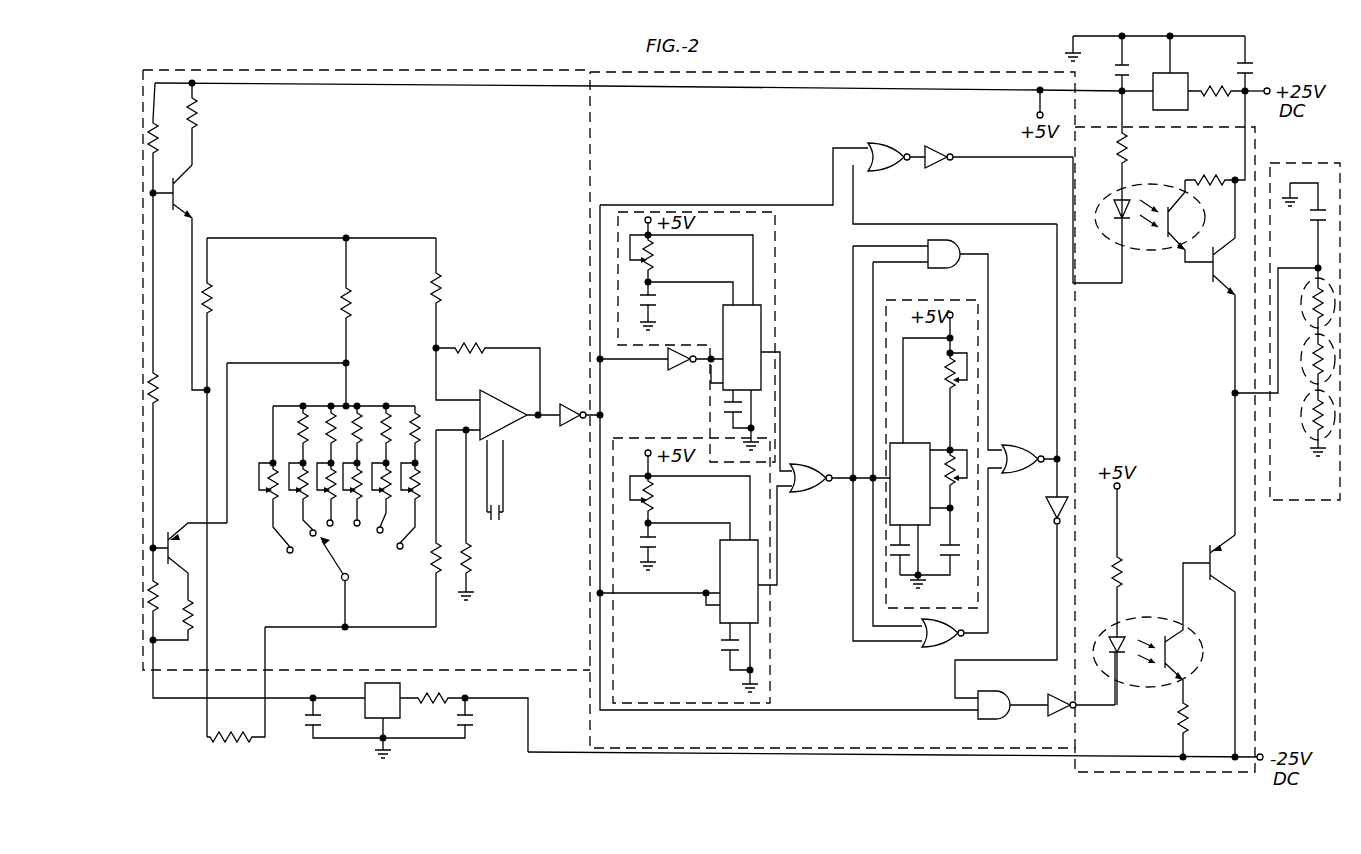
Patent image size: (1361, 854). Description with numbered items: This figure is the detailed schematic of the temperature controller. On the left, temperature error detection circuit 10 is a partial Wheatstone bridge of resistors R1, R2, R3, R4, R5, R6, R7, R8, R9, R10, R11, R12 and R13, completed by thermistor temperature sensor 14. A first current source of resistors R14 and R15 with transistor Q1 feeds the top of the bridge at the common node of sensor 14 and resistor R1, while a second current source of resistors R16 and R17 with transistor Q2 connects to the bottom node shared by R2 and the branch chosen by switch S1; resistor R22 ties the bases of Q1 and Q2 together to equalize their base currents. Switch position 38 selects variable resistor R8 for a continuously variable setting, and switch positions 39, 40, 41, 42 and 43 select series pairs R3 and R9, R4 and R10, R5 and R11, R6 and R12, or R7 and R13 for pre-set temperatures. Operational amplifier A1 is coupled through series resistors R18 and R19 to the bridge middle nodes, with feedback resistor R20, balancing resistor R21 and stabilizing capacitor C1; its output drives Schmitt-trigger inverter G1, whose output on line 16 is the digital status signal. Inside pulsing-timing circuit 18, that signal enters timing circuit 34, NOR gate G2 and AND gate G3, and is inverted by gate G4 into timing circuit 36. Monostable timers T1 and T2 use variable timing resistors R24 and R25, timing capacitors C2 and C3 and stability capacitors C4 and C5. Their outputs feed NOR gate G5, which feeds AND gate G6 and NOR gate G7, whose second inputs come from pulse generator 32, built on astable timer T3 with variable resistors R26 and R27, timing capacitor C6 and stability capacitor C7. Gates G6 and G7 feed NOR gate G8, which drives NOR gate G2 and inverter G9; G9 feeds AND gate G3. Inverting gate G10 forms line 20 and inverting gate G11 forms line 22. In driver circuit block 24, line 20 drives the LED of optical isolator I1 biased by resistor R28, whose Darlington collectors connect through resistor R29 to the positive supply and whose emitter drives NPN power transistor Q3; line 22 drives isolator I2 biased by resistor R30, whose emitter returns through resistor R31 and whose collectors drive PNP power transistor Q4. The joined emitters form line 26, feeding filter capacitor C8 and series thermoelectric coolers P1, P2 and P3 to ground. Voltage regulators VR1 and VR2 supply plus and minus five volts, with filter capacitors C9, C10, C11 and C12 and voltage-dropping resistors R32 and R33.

The temperature error detection circuit 10 is at (446, 72).
The temperature sensor 14 is at (238, 732).
The line 16 is at (590, 422).
The pulsing-timing circuit 18 is at (924, 73).
The line 20 is at (1003, 158).
The line 22 is at (1100, 706).
The driver circuit block 24 is at (1262, 560).
The line 26 is at (1234, 398).
The pulse generator 32 is at (936, 300).
The timing circuit 34 is at (624, 440).
The timing circuit 36 is at (778, 276).
The switch position 38 is at (286, 554).
The switch position 39 is at (312, 538).
The switch position 40 is at (333, 526).
The switch position 41 is at (358, 528).
The switch position 42 is at (380, 534).
The switch position 43 is at (402, 550).
The operational amplifier A1 is at (504, 397).
The stabilizing capacitor C1 is at (504, 516).
The timing capacitor C2 is at (658, 548).
The timing capacitor C3 is at (658, 300).
The capacitor C4 is at (738, 650).
The capacitor C5 is at (733, 412).
The timing capacitor C6 is at (960, 550).
The capacitor C7 is at (895, 548).
The filter capacitor C8 is at (1316, 212).
The capacitor C9 is at (1240, 68).
The capacitor C10 is at (1115, 70).
The capacitor C11 is at (476, 719).
The capacitor C12 is at (312, 724).
The logic gate inverter G1 is at (565, 403).
The NOR gate G2 is at (876, 144).
The AND gate G3 is at (990, 692).
The inverting gate G4 is at (684, 351).
The NOR gate G5 is at (806, 468).
The AND gate G6 is at (961, 247).
The NOR gate G7 is at (935, 648).
The NOR gate G8 is at (1018, 446).
The inverter gate G9 is at (1050, 520).
The inverting gate G10 is at (940, 146).
The inverting gate G11 is at (1052, 700).
The optical isolation device I1 is at (1152, 255).
The optical isolation device I2 is at (1128, 618).
The thermoelectric cooler P1 is at (1306, 306).
The thermoelectric cooler P2 is at (1304, 360).
The thermoelectric cooler P3 is at (1304, 410).
The transistor Q1 is at (178, 190).
The transistor Q2 is at (172, 530).
The NPN power transistor Q3 is at (1210, 282).
The PNP power transistor Q4 is at (1208, 556).
The resistor R1 is at (212, 292).
The resistor R2 is at (352, 312).
The fixed resistor R3 is at (300, 430).
The fixed resistor R4 is at (331, 432).
The fixed resistor R5 is at (360, 425).
The fixed resistor R6 is at (388, 428).
The fixed resistor R7 is at (419, 446).
The variable resistor R8 is at (283, 493).
The variable resistor R9 is at (305, 493).
The variable resistor R10 is at (330, 495).
The variable resistor R11 is at (355, 500).
The variable resistor R12 is at (393, 480).
The variable resistor R13 is at (420, 490).
The resistor R14 is at (160, 138).
The resistor R15 is at (198, 112).
The resistor R16 is at (155, 618).
The resistor R17 is at (192, 618).
The series resistor R18 is at (441, 290).
The series resistor R19 is at (438, 582).
The feedback resistor R20 is at (472, 345).
The balancing resistor R21 is at (468, 560).
The resistor R22 is at (157, 390).
The variable timing resistor R24 is at (655, 492).
The variable timing resistor R25 is at (660, 257).
The variable timing resistor R26 is at (945, 384).
The variable timing resistor R27 is at (956, 486).
The bias resistor R28 is at (1127, 152).
The bias resistor R29 is at (1212, 176).
The bias resistor R30 is at (1122, 575).
The bias resistor R31 is at (1188, 722).
The resistor R32 is at (1214, 94).
The resistor R33 is at (432, 696).
The switch S1 is at (350, 584).
The timer T1 is at (716, 618).
The timer T2 is at (764, 330).
The timer T3 is at (914, 445).
The voltage regulator VR1 is at (1177, 76).
The voltage regulator VR2 is at (378, 690).